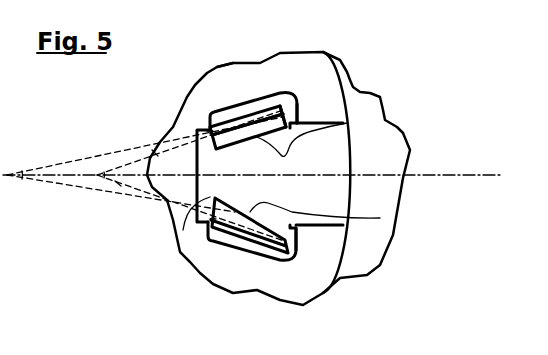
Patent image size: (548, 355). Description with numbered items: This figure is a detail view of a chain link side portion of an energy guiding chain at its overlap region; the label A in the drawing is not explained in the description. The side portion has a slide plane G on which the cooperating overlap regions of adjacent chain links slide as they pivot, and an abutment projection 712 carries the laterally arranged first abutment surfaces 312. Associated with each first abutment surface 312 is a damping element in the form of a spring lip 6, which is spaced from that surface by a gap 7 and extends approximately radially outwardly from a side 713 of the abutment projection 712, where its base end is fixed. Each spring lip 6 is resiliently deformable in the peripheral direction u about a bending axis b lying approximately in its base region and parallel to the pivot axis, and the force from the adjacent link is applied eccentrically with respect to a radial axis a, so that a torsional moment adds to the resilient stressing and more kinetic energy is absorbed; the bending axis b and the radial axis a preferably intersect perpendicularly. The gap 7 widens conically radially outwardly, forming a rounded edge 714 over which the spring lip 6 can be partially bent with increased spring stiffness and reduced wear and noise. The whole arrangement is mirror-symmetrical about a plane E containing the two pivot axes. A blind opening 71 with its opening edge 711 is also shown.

The viewing direction A is at (230, 63).
The peripheral direction u is at (262, 108).
The spring lip 6 is at (268, 104).
The gap 7 is at (293, 104).
The blind opening 71 is at (233, 109).
The opening edge 711 is at (208, 113).
The abutment projection 712 is at (353, 177).
The side 713 is at (183, 228).
The edge 714 is at (347, 123).
The first abutment surface 312 is at (297, 107).
The plane E is at (261, 175).
The slide plane G is at (323, 293).
The radial axis a is at (155, 153).
The bending axis b is at (207, 129).